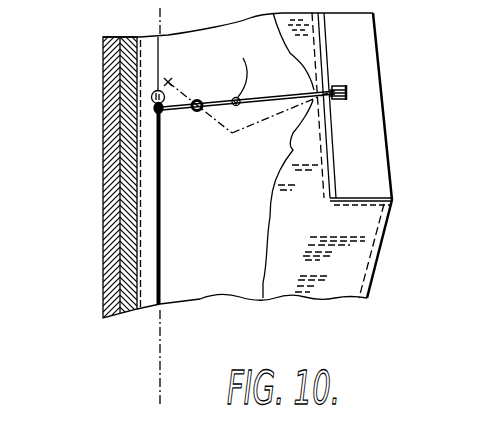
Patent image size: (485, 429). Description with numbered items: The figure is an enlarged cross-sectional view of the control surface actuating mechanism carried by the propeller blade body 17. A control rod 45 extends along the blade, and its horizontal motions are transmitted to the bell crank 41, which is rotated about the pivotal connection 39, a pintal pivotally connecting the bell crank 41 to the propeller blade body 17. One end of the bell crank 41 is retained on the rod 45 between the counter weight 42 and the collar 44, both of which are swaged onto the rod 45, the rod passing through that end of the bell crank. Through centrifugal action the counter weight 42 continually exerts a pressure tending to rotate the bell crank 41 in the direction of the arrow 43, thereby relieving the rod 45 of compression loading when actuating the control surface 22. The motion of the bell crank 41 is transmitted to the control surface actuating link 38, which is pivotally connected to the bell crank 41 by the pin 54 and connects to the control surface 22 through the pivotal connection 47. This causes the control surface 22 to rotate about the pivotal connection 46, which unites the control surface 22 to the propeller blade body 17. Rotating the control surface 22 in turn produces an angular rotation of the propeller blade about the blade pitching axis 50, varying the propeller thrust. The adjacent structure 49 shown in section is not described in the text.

The propeller blade body 17 is at (360, 251).
The control surface 22 is at (373, 128).
The control surface actuating link 38 is at (260, 98).
The pivotal connection 39 is at (198, 100).
The bell crank 41 is at (231, 131).
The counter weight 42 is at (165, 92).
The arrow 43 is at (163, 37).
The collar 44 is at (164, 114).
The control rod 45 is at (162, 238).
The pivotal connection 46 is at (258, 120).
The pivotal connection 47 is at (343, 86).
The wall 49 is at (103, 124).
The blade pitching axis 50 is at (160, 357).
The pin 54 is at (243, 58).